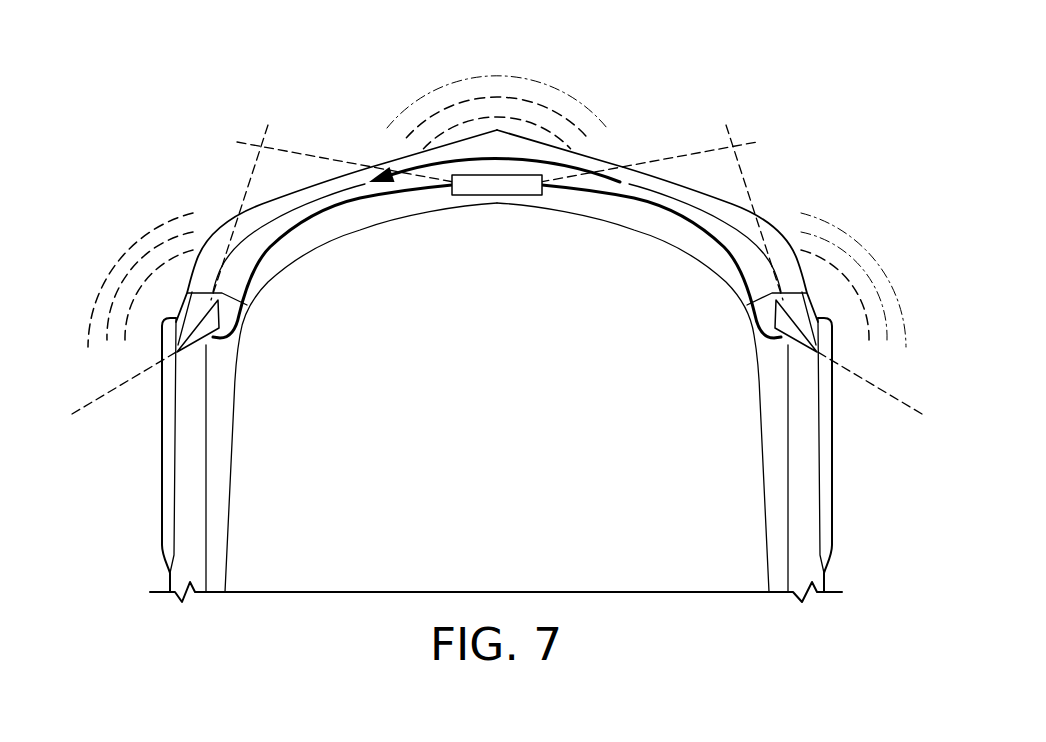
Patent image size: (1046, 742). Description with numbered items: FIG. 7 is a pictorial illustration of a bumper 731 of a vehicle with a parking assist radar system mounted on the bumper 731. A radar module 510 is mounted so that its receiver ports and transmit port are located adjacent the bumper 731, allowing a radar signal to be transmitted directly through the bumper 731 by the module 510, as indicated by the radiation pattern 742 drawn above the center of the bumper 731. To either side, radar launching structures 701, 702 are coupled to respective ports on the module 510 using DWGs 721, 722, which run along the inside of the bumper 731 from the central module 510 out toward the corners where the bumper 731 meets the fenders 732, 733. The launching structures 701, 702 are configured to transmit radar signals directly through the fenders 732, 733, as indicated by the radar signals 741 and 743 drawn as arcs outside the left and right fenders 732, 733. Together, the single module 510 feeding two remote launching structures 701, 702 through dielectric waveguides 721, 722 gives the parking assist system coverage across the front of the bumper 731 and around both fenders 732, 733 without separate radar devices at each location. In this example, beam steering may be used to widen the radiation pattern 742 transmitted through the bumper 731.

The radar module 510 is at (503, 195).
The radar launching structure 701 is at (186, 352).
The radar launching structure 702 is at (808, 352).
The DWG 721 is at (237, 318).
The DWG 722 is at (757, 318).
The bumper 731 is at (667, 185).
The fender 732 is at (177, 445).
The fender 733 is at (817, 445).
The radar signal 741 is at (112, 268).
The radiation pattern 742 is at (468, 80).
The right vibration waves 743 is at (887, 282).